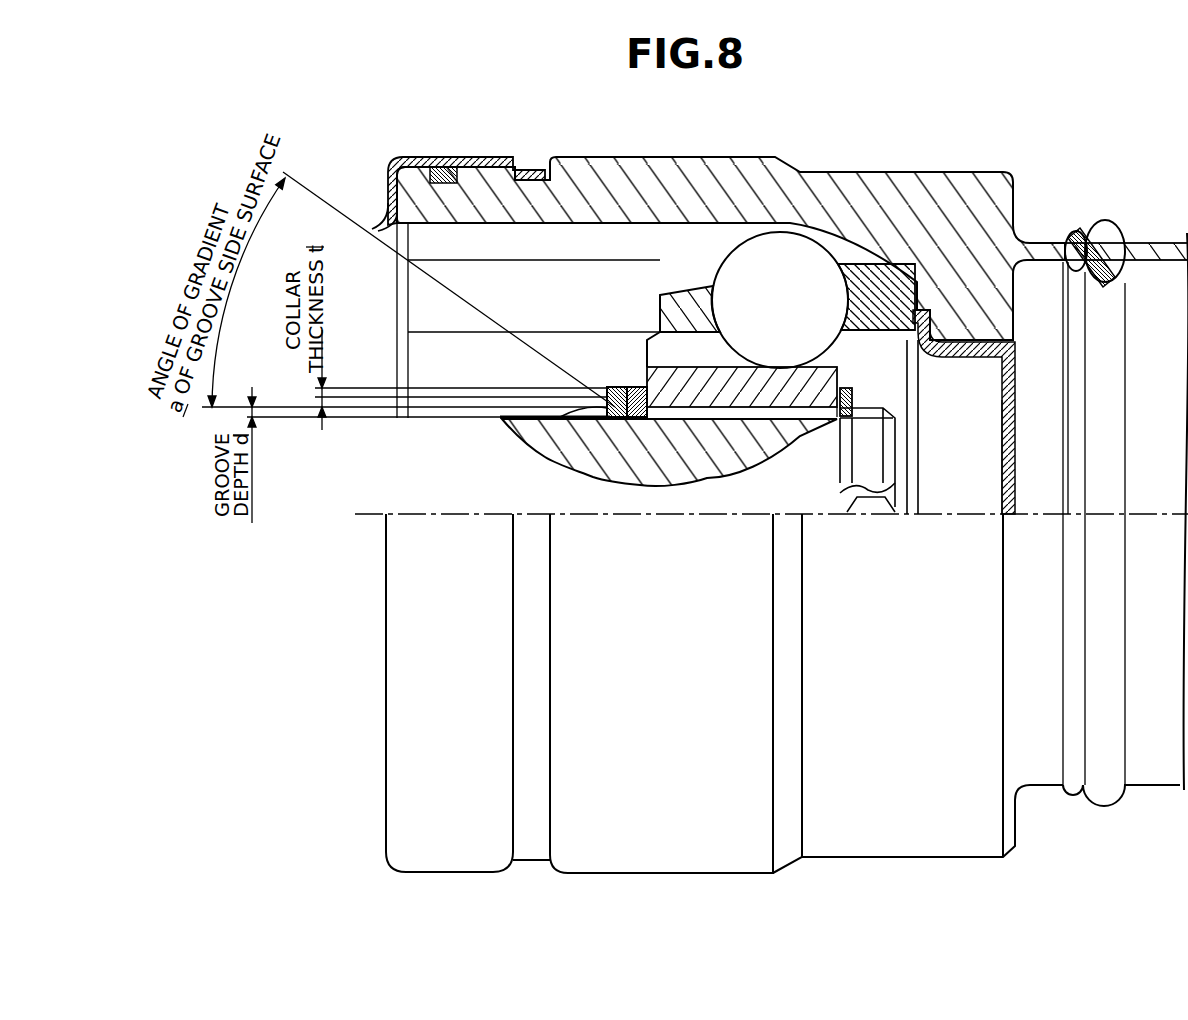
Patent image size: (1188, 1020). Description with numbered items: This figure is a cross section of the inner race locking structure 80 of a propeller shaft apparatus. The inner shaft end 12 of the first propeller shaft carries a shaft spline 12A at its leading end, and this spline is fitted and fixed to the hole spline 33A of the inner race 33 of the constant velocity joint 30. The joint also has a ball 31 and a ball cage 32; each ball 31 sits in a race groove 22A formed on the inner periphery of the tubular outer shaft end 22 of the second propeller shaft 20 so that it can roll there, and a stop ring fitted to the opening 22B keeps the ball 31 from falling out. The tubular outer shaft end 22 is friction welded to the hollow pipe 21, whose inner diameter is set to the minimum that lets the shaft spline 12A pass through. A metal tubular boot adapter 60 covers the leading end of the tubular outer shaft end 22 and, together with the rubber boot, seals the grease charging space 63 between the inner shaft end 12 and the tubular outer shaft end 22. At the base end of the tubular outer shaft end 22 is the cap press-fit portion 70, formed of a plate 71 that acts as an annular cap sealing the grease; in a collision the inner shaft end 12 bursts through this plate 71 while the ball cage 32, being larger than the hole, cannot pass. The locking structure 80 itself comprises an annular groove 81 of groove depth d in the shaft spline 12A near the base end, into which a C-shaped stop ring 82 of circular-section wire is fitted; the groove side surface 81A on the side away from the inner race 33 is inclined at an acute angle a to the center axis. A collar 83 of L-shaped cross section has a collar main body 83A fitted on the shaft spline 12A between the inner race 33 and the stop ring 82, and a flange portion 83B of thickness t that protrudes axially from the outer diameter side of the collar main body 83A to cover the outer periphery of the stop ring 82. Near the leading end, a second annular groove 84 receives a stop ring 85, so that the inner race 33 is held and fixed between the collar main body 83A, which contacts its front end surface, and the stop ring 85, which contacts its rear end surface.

The inner shaft end 12 is at (519, 411).
The shaft spline 12A is at (683, 417).
The second propeller shaft 20 is at (725, 483).
The hollow pipe 21 is at (1153, 243).
The tubular outer shaft end 22 is at (731, 216).
The race groove 22A is at (703, 237).
The opening 22B is at (430, 234).
The constant velocity joint 30 is at (813, 230).
The ball 31 is at (770, 250).
The ball cage 32 is at (883, 280).
The inner race 33 is at (669, 435).
The hole spline 33A is at (718, 420).
The boot adapter 60 is at (420, 158).
The grease charging space 63 is at (462, 370).
The cap press-fit portion 70 is at (1040, 412).
The plate 71 is at (1017, 423).
The locking structure 80 is at (571, 402).
The annular groove 81 is at (572, 342).
The groove side surface 81A is at (613, 407).
The stop ring 82 is at (612, 412).
The collar 83 is at (600, 325).
The collar main body 83A is at (647, 387).
The flange portion 83B is at (627, 403).
The annular groove 84 is at (853, 408).
The stop ring 85 is at (851, 395).